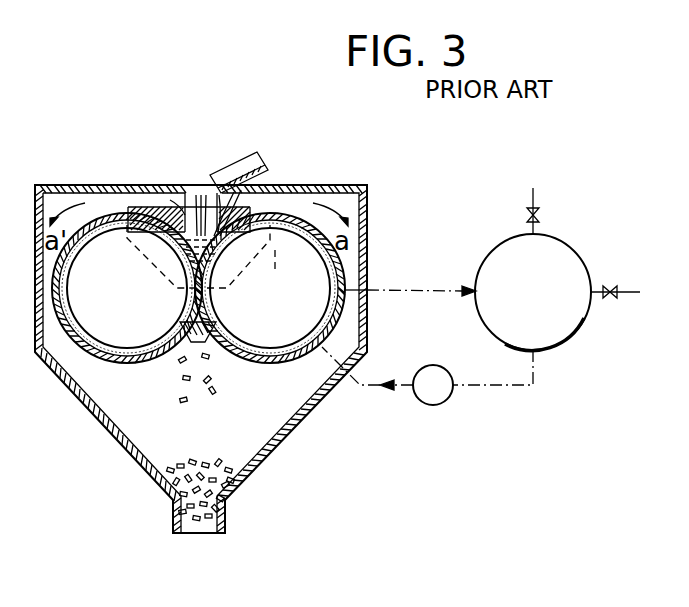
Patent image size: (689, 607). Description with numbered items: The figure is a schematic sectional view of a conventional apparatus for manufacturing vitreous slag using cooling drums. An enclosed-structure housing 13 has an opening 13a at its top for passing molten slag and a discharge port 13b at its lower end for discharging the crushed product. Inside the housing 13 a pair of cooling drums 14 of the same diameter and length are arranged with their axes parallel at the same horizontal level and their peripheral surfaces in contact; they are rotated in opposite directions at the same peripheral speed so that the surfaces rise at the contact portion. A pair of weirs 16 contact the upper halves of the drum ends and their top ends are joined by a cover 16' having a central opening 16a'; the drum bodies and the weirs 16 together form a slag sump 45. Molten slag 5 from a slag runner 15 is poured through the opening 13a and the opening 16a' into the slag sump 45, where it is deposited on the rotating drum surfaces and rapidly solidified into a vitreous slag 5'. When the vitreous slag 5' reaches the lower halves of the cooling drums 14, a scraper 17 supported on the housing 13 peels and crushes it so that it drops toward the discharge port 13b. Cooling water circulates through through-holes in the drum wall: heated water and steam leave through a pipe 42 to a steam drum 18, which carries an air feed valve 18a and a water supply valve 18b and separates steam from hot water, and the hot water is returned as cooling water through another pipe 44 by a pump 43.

The housing 13 is at (364, 183).
The opening 13a is at (186, 205).
The discharge port 13b is at (212, 532).
The molten slag 5 is at (201, 194).
The vitreous slag 5' is at (204, 436).
The cooling drums 14 is at (103, 358).
The slag runner 15 is at (252, 152).
The weirs 16 is at (256, 246).
The opening of the cover 16a' is at (247, 150).
The cover 16' is at (263, 190).
The scraper 17 is at (188, 330).
The steam drum 18 is at (565, 243).
The air feed valve 18a is at (528, 215).
The water supply valve 18b is at (611, 300).
The pipe 42 is at (418, 289).
The pump 43 is at (428, 406).
The pipe 44 is at (500, 388).
The slag sump 45 is at (175, 208).